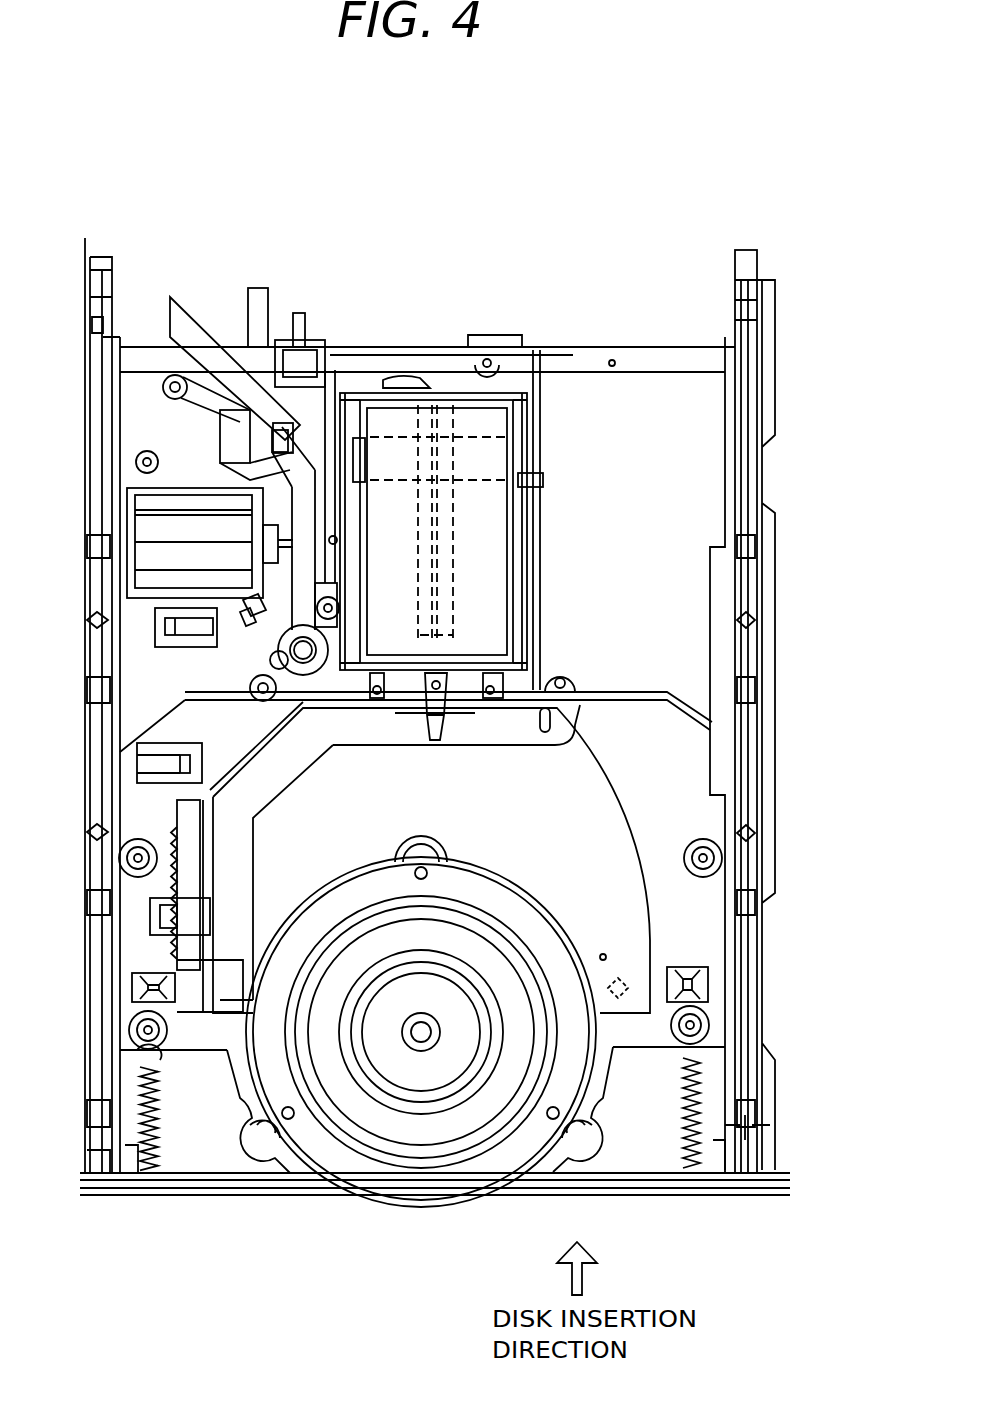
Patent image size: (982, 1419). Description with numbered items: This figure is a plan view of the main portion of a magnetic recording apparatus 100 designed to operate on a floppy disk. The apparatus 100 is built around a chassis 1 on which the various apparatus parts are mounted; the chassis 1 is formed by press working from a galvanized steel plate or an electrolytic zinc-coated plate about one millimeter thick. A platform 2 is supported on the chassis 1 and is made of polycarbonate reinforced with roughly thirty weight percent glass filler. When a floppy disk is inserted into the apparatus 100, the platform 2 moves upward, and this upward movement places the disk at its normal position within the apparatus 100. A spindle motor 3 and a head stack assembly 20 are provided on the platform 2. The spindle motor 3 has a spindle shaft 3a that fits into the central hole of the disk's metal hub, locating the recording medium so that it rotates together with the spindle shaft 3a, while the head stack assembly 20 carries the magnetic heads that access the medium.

The magnetic recording apparatus 100 is at (504, 238).
The chassis 1 is at (780, 582).
The platform 2 is at (665, 788).
The spindle motor 3 is at (421, 1083).
The spindle shaft 3a is at (421, 1026).
The head stack assembly 20 is at (480, 465).